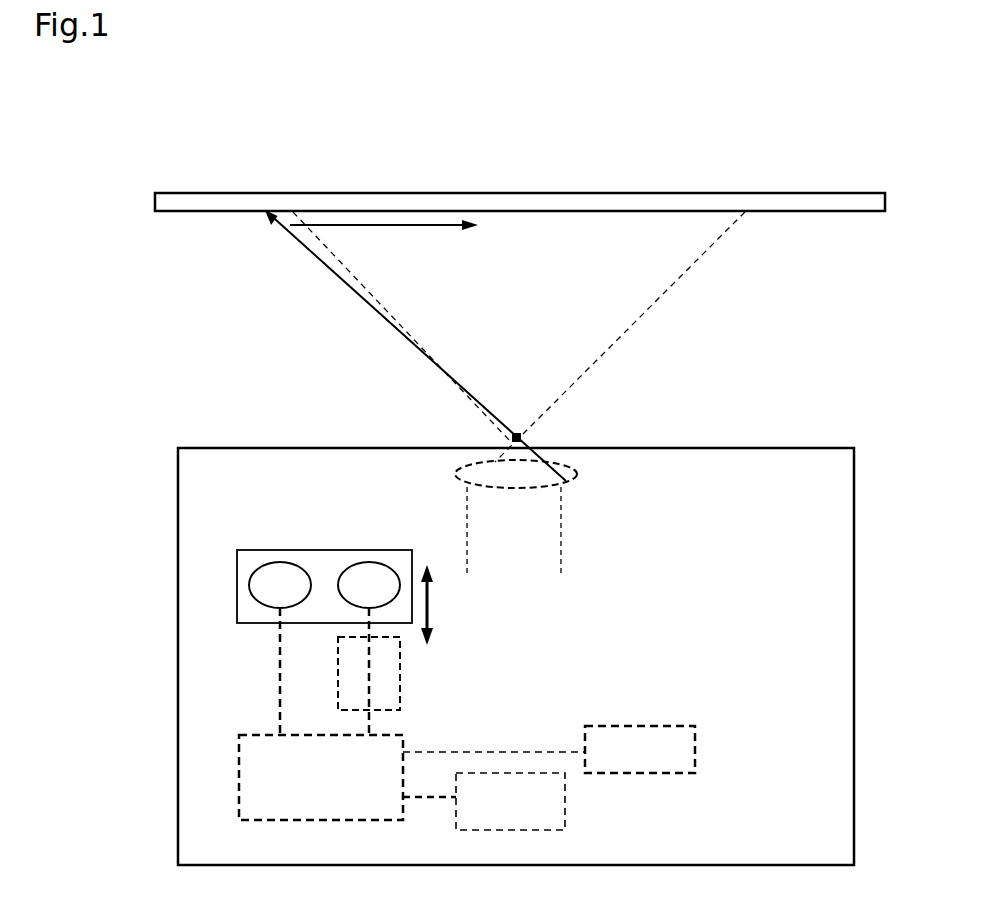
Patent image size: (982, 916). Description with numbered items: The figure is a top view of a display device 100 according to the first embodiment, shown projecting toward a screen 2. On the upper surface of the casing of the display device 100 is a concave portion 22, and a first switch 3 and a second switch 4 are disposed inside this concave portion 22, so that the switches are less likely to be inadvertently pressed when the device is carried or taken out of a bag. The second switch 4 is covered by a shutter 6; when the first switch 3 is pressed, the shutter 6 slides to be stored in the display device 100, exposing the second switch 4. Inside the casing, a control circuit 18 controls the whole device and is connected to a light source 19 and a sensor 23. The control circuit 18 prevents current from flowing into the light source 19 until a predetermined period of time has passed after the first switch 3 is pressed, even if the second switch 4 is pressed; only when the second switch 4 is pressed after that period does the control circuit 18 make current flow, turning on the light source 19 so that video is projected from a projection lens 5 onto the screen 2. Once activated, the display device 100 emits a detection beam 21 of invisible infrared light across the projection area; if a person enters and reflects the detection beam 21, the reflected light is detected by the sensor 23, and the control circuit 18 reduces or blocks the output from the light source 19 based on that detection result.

The screen 2 is at (845, 199).
The detection beam 21 is at (325, 266).
The display device 100 is at (145, 448).
The concave portion 22 is at (392, 549).
The first switch 3 is at (281, 575).
The second switch 4 is at (364, 575).
The shutter 6 is at (388, 690).
The projection lens 5 is at (566, 468).
The control circuit 18 is at (370, 822).
The light source 19 is at (548, 832).
The sensor 23 is at (695, 760).